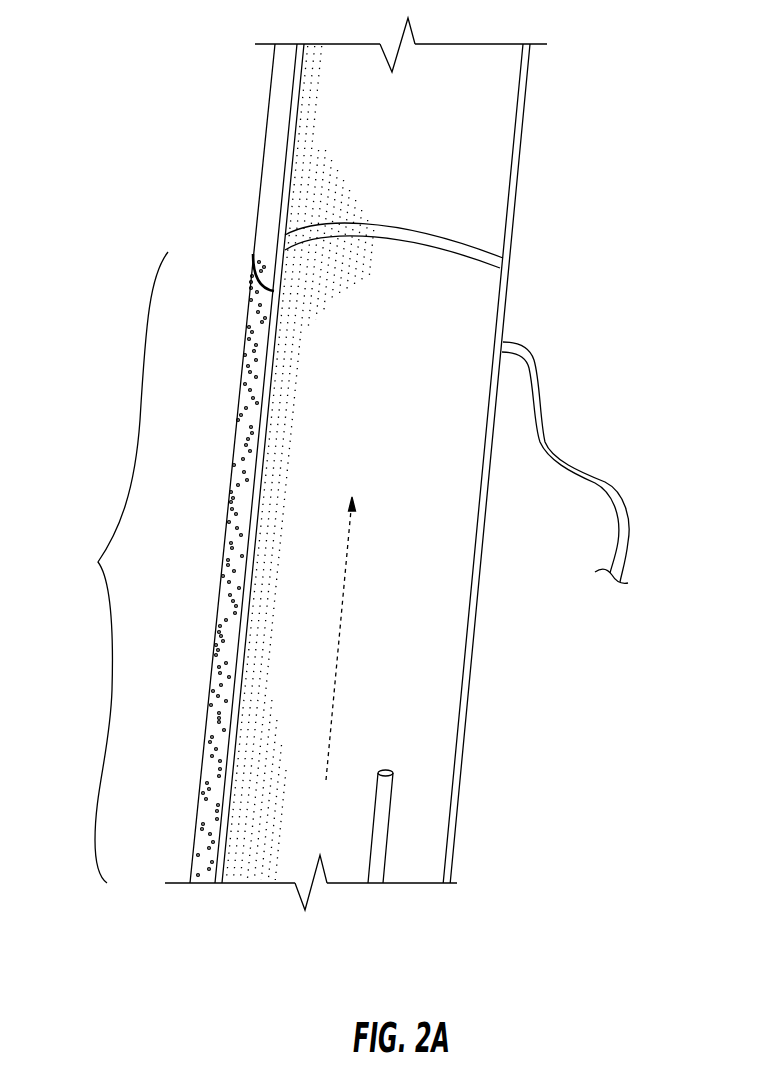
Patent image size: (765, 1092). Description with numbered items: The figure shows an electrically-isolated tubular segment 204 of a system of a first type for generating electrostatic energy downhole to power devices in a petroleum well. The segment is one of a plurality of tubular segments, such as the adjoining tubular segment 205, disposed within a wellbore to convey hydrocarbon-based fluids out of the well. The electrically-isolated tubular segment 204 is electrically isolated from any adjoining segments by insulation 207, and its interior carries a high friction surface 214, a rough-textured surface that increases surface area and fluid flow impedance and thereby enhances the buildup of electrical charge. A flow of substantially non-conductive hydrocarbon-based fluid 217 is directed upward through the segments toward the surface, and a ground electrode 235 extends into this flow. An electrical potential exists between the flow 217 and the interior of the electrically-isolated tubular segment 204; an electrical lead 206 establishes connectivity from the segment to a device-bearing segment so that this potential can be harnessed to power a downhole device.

The electrically-isolated tubular segment 204 is at (110, 567).
The tubular segment 205 is at (430, 146).
The electrical lead 206 is at (547, 412).
The insulation 207 is at (247, 313).
The high friction surface 214 is at (460, 570).
The flow of substantially non-conductive hydrocarbon-based fluid 217 is at (340, 653).
The ground electrode 235 is at (387, 823).